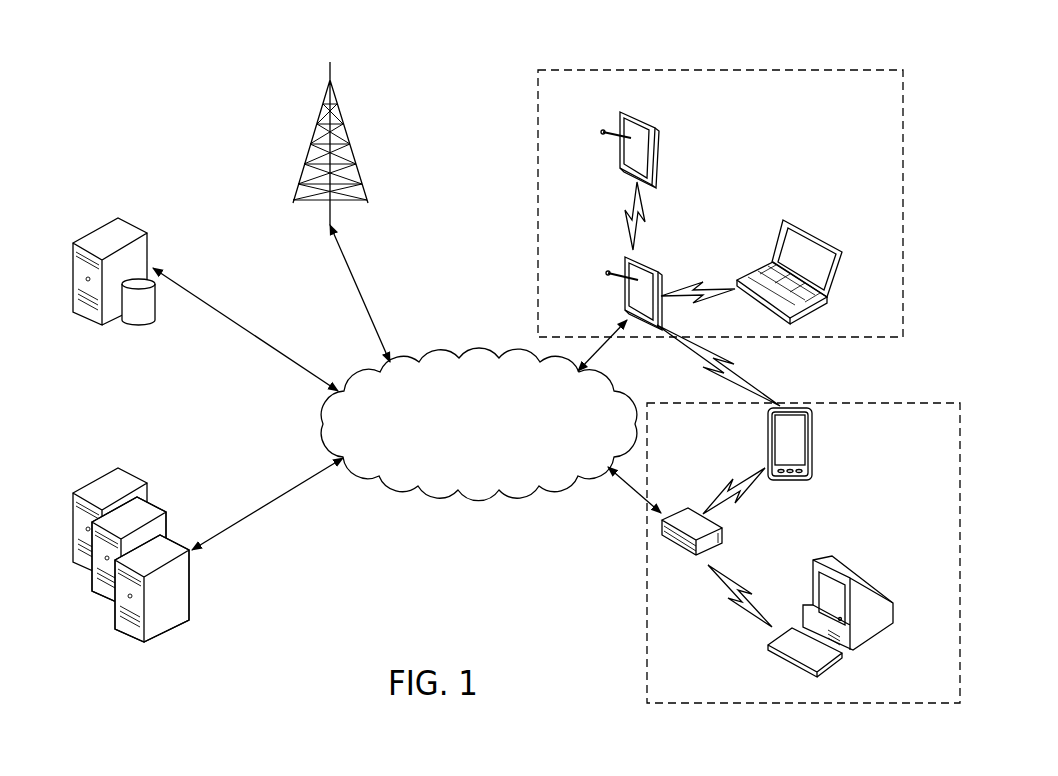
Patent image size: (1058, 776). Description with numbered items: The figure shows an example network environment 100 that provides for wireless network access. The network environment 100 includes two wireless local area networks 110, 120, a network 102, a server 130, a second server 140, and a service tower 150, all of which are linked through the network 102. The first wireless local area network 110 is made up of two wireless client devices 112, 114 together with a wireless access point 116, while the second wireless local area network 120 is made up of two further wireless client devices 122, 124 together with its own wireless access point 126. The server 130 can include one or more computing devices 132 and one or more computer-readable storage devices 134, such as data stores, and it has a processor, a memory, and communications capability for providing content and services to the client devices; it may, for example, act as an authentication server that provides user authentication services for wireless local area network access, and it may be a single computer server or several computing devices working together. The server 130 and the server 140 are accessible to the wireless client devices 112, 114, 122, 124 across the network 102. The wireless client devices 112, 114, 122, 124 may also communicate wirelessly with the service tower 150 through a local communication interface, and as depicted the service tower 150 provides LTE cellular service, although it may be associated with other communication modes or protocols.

The network environment 100 is at (584, 27).
The network 102 is at (458, 356).
The wireless local area network 110 is at (790, 70).
The wireless client device 112 is at (655, 140).
The wireless client device 114 is at (825, 240).
The wireless access point 116 is at (657, 262).
The wireless local area network 120 is at (895, 402).
The wireless client device 122 is at (813, 460).
The wireless client device 124 is at (880, 577).
The wireless access point 126 is at (732, 512).
The server 130 is at (146, 273).
The computing device 132 is at (130, 223).
The computer-readable storage device 134 is at (155, 320).
The server 140 is at (85, 614).
The service tower 150 is at (360, 177).